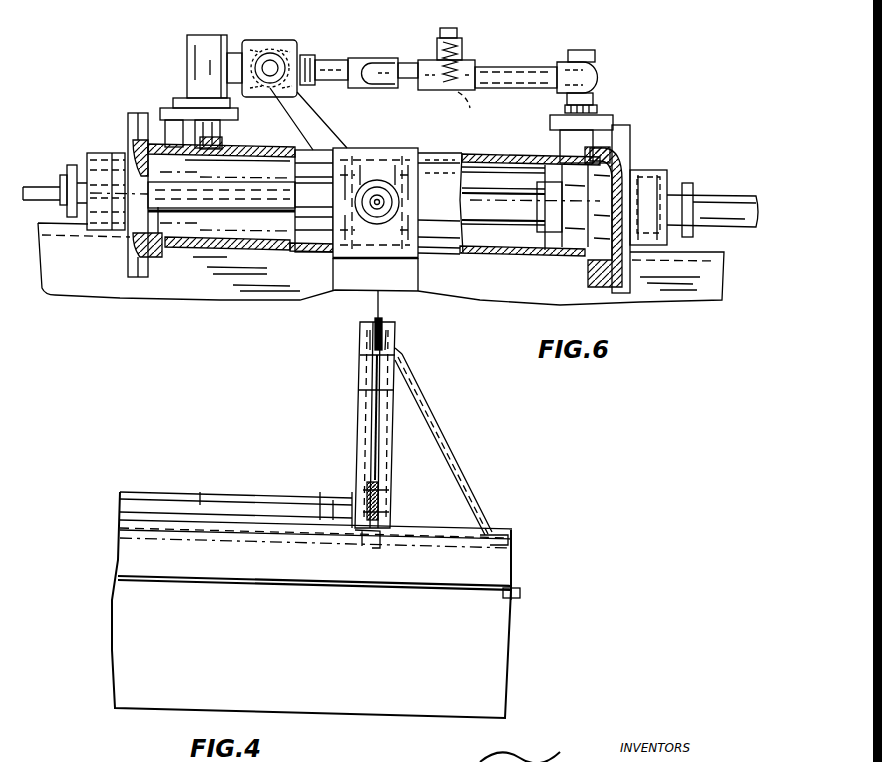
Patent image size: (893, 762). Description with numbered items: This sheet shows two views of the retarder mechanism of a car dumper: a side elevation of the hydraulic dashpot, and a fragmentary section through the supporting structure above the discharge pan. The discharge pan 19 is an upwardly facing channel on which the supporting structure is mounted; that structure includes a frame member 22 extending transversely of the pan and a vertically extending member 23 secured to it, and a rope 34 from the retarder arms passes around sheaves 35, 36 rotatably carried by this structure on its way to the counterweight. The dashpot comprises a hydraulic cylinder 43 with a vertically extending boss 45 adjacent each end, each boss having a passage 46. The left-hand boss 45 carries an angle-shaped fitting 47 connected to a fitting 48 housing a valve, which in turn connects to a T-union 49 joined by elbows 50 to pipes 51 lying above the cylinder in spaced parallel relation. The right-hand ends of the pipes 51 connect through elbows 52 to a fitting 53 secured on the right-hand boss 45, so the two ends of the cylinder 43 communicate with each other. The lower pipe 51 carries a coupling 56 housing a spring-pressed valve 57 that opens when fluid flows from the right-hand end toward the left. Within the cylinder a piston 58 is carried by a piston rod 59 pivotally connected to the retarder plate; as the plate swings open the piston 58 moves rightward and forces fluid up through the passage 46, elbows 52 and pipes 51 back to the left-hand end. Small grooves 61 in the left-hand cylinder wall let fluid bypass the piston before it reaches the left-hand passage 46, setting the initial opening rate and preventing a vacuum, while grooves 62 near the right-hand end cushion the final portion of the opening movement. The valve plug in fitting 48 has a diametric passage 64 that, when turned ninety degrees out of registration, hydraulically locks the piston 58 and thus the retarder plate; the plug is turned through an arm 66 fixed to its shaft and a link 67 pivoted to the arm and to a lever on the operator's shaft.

In FIG. 4, the discharge pan 19 is at (513, 648).
In FIG. 4, the frame member 22 is at (415, 529).
In FIG. 4, the vertically extending member 23 is at (393, 440).
In FIG. 4, the rope 34 is at (372, 429).
In FIG. 4, the sheave 35 is at (381, 488).
In FIG. 4, the sheave 36 is at (383, 321).
In FIG. 6, the hydraulic cylinder 43 is at (504, 256).
In FIG. 6, the boss 45 is at (222, 136).
In FIG. 6, the passage 46 is at (220, 163).
In FIG. 6, the angle-shaped fitting 47 is at (222, 35).
In FIG. 6, the fitting 48 is at (296, 56).
In FIG. 6, the T-union 49 is at (352, 88).
In FIG. 6, the elbow 50 is at (388, 89).
In FIG. 6, the pipe 51 is at (521, 70).
In FIG. 6, the elbow 52 is at (600, 76).
In FIG. 6, the fitting 53 is at (597, 109).
In FIG. 6, the coupling 56 is at (478, 69).
In FIG. 6, the spring-pressed valve 57 is at (468, 81).
In FIG. 6, the piston 58 is at (228, 222).
In FIG. 6, the piston rod 59 is at (712, 201).
In FIG. 6, the groove 61 is at (128, 156).
In FIG. 6, the groove 62 is at (622, 164).
In FIG. 6, the passage 64 is at (280, 48).
In FIG. 6, the arm 66 is at (342, 146).
In FIG. 6, the link 67 is at (45, 184).